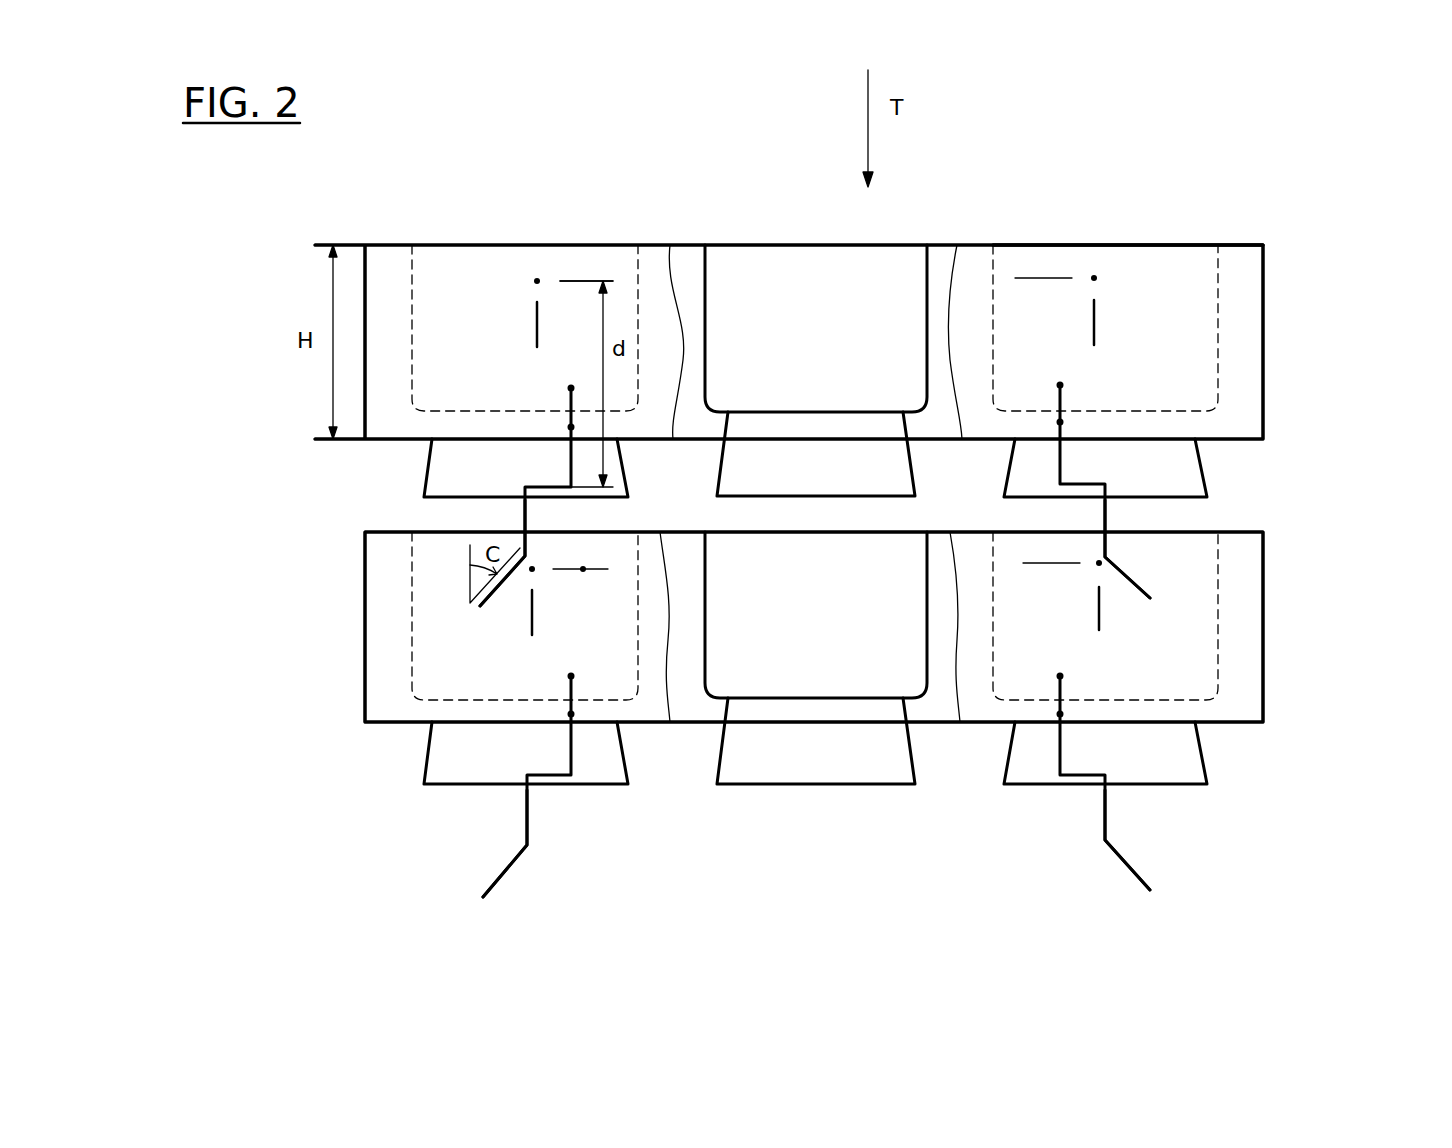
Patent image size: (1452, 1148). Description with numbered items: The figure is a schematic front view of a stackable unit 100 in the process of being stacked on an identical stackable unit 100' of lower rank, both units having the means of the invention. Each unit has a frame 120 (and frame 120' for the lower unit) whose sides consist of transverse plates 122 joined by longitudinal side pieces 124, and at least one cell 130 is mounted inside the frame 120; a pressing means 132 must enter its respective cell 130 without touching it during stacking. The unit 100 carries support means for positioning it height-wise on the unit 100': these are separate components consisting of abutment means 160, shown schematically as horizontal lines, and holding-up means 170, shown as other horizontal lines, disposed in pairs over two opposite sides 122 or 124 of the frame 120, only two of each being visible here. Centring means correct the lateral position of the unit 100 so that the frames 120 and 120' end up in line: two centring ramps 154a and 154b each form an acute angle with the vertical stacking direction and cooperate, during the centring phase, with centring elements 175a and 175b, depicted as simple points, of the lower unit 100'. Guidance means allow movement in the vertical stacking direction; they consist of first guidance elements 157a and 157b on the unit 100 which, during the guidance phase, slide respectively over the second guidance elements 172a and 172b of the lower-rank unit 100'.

The stackable unit 100 is at (690, 342).
The stackable unit of lower rank 100' is at (695, 627).
The frame 120 is at (879, 342).
The frame of lower-rank unit 120' is at (905, 627).
The transverse plate side 122 is at (1148, 262).
The longitudinal side piece 124 is at (1174, 175).
The cell 130 is at (818, 630).
The pressing means 132 is at (833, 497).
The centring ramp 154a is at (1133, 597).
The centring ramp 154b is at (500, 597).
The first guidance element 157a is at (1080, 484).
The first guidance element 157b is at (526, 520).
The abutment means 160 is at (552, 488).
The holding-up means 170 is at (584, 281).
The second guidance element 172a is at (1097, 307).
The second guidance element 172b is at (535, 305).
The centring element 175a is at (1094, 276).
The centring element 175b is at (537, 279).